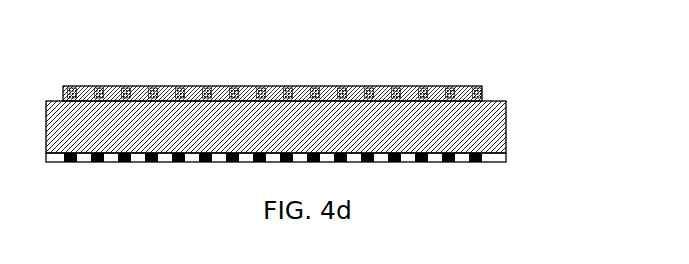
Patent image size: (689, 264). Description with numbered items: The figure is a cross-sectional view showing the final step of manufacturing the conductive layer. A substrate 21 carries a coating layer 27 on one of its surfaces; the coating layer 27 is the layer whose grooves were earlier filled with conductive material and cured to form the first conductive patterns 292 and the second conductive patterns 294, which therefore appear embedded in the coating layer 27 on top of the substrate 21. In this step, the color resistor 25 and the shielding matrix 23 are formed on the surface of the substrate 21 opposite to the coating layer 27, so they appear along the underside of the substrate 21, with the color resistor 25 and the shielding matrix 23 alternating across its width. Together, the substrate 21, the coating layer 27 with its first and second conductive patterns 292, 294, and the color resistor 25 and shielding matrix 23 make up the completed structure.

The substrate 21 is at (490, 137).
The shielding matrix 23 is at (393, 163).
The color resistor 25 is at (458, 163).
The coating layer 27 is at (463, 98).
The first conductive patterns 292 is at (73, 93).
The second conductive patterns 294 is at (147, 93).